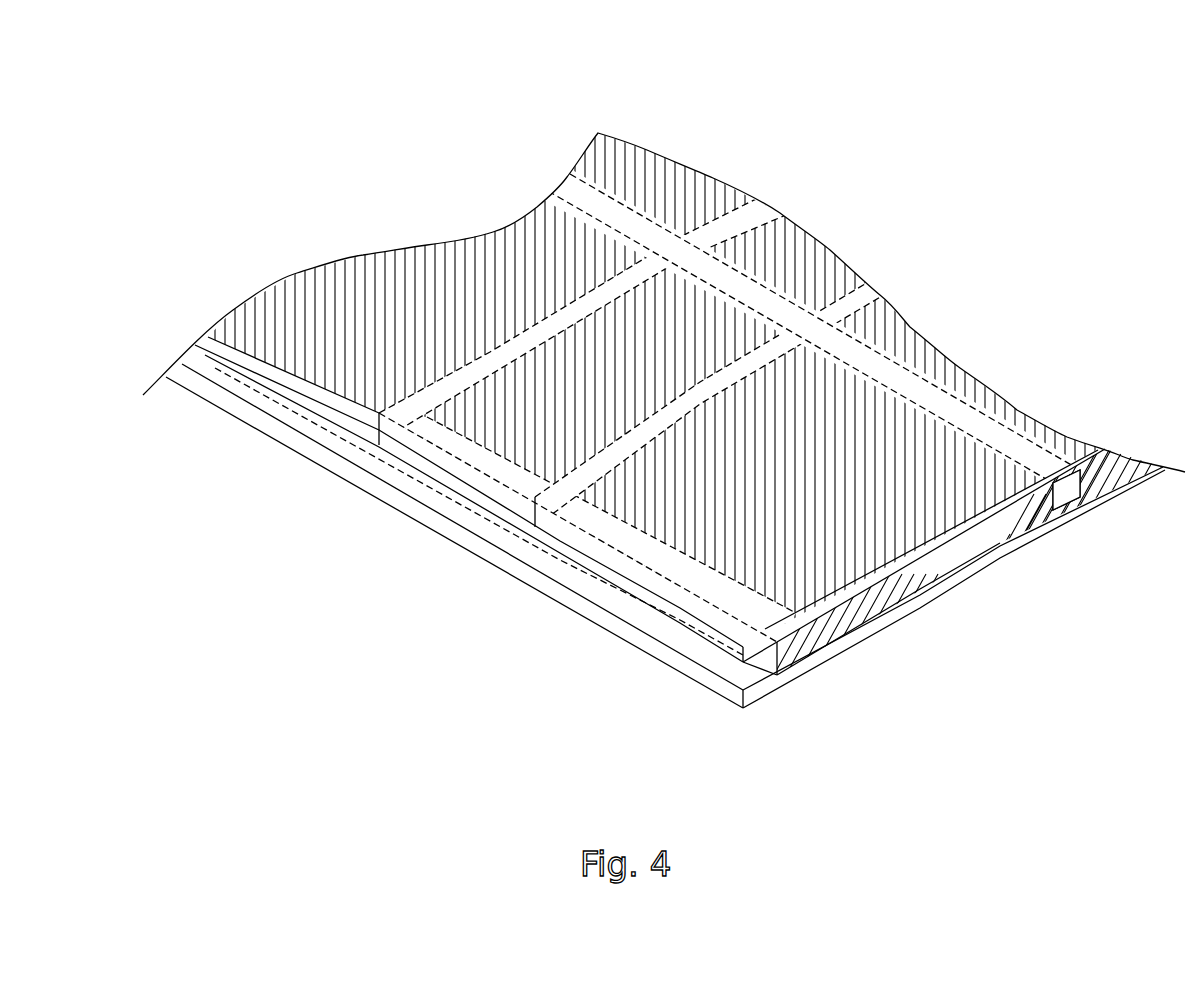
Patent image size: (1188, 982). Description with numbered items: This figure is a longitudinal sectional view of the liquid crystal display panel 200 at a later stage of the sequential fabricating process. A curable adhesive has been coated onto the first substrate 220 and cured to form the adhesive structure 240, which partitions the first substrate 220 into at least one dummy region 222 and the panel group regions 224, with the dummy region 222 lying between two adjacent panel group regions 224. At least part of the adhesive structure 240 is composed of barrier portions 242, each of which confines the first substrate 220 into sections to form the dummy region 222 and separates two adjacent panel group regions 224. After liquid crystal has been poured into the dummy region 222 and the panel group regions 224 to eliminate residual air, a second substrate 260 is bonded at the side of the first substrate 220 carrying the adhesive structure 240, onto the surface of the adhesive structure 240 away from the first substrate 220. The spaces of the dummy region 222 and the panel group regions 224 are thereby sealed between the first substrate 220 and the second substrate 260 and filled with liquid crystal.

The liquid crystal display panel 200 is at (646, 399).
The first substrate 220 is at (661, 637).
The dummy region 222 is at (800, 275).
The panel group regions 224 is at (398, 270).
The adhesive structure 240 is at (237, 312).
The barrier portions 242 is at (713, 230).
The second substrate 260 is at (792, 636).